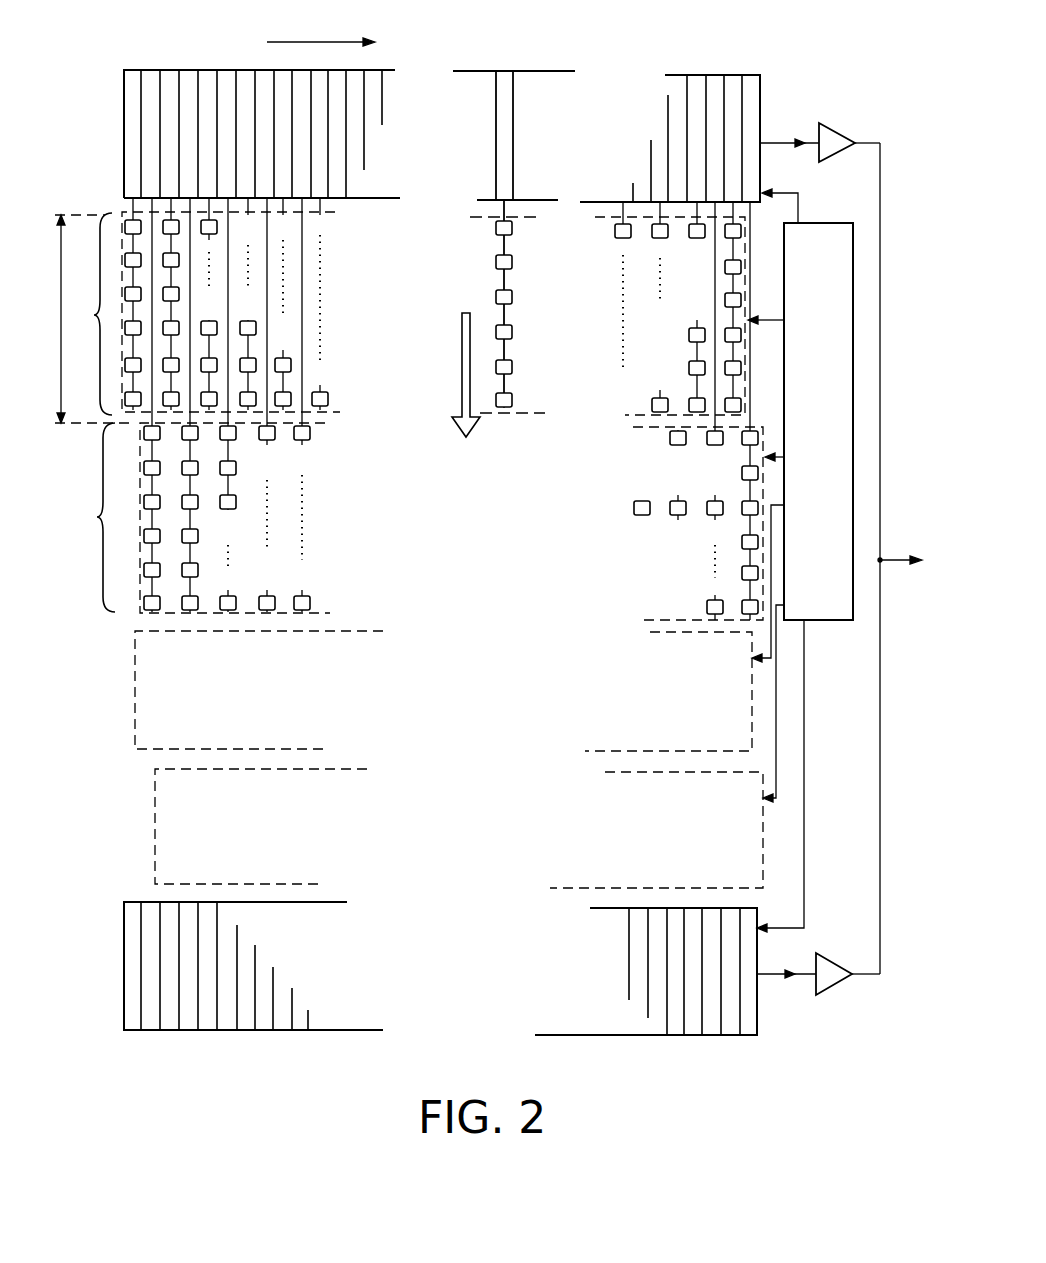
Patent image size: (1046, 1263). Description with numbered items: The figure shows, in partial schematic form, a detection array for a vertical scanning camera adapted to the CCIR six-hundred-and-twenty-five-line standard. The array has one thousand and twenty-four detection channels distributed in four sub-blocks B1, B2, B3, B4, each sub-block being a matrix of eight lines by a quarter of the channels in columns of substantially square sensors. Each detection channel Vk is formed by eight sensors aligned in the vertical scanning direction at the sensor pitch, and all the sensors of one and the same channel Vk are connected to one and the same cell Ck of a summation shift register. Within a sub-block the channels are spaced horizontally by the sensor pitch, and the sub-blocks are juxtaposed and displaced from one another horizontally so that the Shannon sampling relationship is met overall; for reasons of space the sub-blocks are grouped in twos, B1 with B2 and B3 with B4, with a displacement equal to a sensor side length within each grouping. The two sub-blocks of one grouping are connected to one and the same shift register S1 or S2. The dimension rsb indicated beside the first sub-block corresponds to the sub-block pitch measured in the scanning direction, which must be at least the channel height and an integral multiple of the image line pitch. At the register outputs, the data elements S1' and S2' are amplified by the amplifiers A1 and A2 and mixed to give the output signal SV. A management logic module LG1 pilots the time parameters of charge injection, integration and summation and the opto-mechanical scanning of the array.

The shift register S1 is at (232, 134).
The shift register S2 is at (226, 966).
The data elements S1' is at (685, 138).
The data elements S2' is at (664, 971).
The cell of the summation shift register Ck is at (505, 133).
The detection channel Vk is at (504, 418).
The sub-block height rsb is at (95, 319).
The sub-block B1 is at (92, 317).
The sub-block B2 is at (90, 519).
The sub-block B3 is at (128, 690).
The sub-block B4 is at (148, 822).
The amplifier A1 is at (838, 132).
The amplifier A2 is at (832, 980).
The output signal SV is at (900, 558).
The management logic module LG1 is at (818, 620).